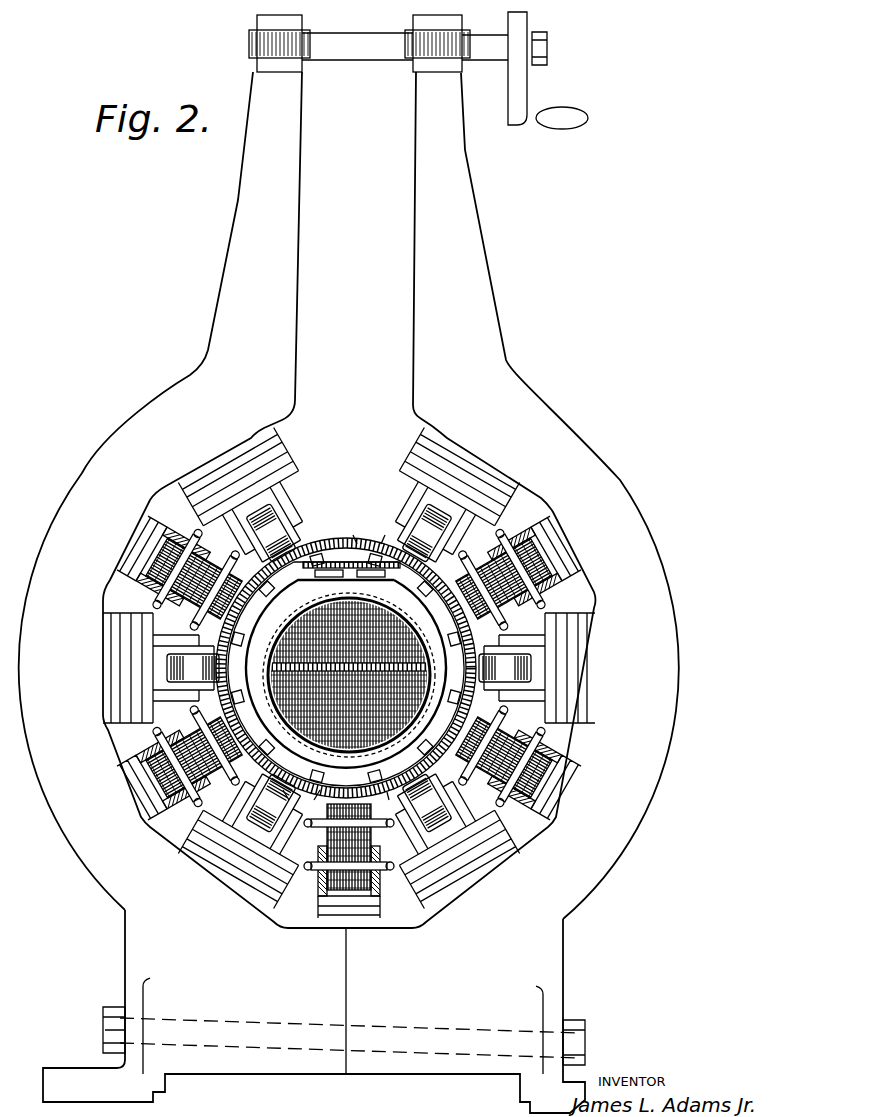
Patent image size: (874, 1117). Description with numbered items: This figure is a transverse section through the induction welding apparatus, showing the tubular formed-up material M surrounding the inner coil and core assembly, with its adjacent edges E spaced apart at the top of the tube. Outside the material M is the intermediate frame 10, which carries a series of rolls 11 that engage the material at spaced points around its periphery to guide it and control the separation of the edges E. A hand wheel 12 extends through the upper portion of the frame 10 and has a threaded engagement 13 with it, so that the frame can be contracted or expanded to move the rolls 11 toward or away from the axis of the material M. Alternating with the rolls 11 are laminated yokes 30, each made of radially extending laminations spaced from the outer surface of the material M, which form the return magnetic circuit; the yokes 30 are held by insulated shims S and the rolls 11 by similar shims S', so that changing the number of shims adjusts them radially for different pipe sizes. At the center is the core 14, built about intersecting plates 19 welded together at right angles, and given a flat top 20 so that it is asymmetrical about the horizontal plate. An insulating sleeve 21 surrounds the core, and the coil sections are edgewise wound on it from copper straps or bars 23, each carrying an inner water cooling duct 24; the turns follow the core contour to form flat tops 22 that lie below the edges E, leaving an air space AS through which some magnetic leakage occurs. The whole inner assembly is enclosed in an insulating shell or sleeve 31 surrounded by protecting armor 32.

The intermediate frame 10 is at (78, 482).
The rolls 11 is at (349, 659).
The hand wheel 12 is at (526, 84).
The threaded engagement 13 is at (303, 44).
The center core 14 is at (349, 686).
The intersecting plates 19 is at (349, 682).
The flat top 20 is at (345, 667).
The sleeve 21 is at (331, 585).
The flat tops 22 is at (351, 549).
The copper straps or bars 23 is at (320, 674).
The water cooling duct 24 is at (324, 668).
The laminated yokes 30 is at (349, 699).
The shell or sleeve of insulating material 31 is at (395, 814).
The protecting armor 32 is at (301, 810).
The insulated shims S is at (357, 735).
The shims S' is at (357, 667).
The edges E is at (357, 524).
The material M is at (387, 524).
The air space AS is at (339, 557).